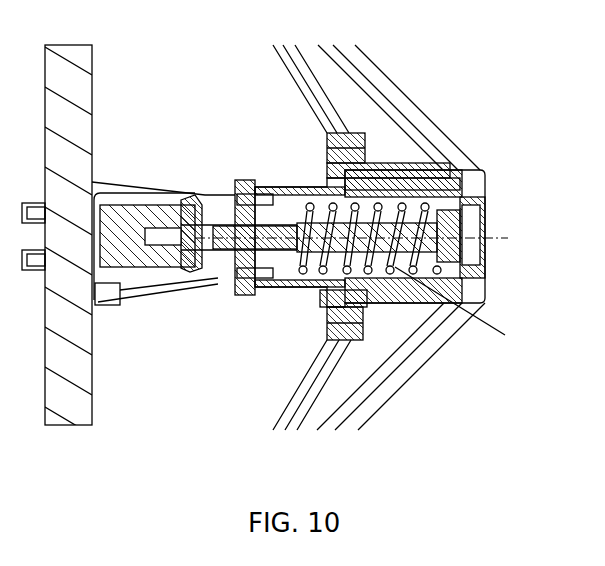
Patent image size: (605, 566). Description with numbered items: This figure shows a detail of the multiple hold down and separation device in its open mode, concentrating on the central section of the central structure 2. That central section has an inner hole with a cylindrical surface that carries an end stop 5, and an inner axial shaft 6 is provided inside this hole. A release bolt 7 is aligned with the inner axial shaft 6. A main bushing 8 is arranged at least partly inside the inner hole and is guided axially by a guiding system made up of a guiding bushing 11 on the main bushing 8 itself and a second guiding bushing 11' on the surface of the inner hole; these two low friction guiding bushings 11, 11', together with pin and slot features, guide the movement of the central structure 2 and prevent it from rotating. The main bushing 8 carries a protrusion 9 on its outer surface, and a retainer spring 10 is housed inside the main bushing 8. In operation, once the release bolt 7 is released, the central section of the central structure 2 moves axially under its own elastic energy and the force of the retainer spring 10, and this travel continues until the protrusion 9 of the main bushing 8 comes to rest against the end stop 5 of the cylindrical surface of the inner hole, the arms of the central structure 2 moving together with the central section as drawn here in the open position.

The central structure 2 is at (432, 348).
The end stop 5 is at (326, 172).
The inner axial shaft 6 is at (360, 240).
The release bolt 7 is at (243, 296).
The main bushing 8 is at (280, 288).
The protrusion 9 is at (383, 173).
The retainer spring 10 is at (469, 280).
The guiding bushing 11 is at (438, 163).
The guiding bushing 11' is at (322, 320).